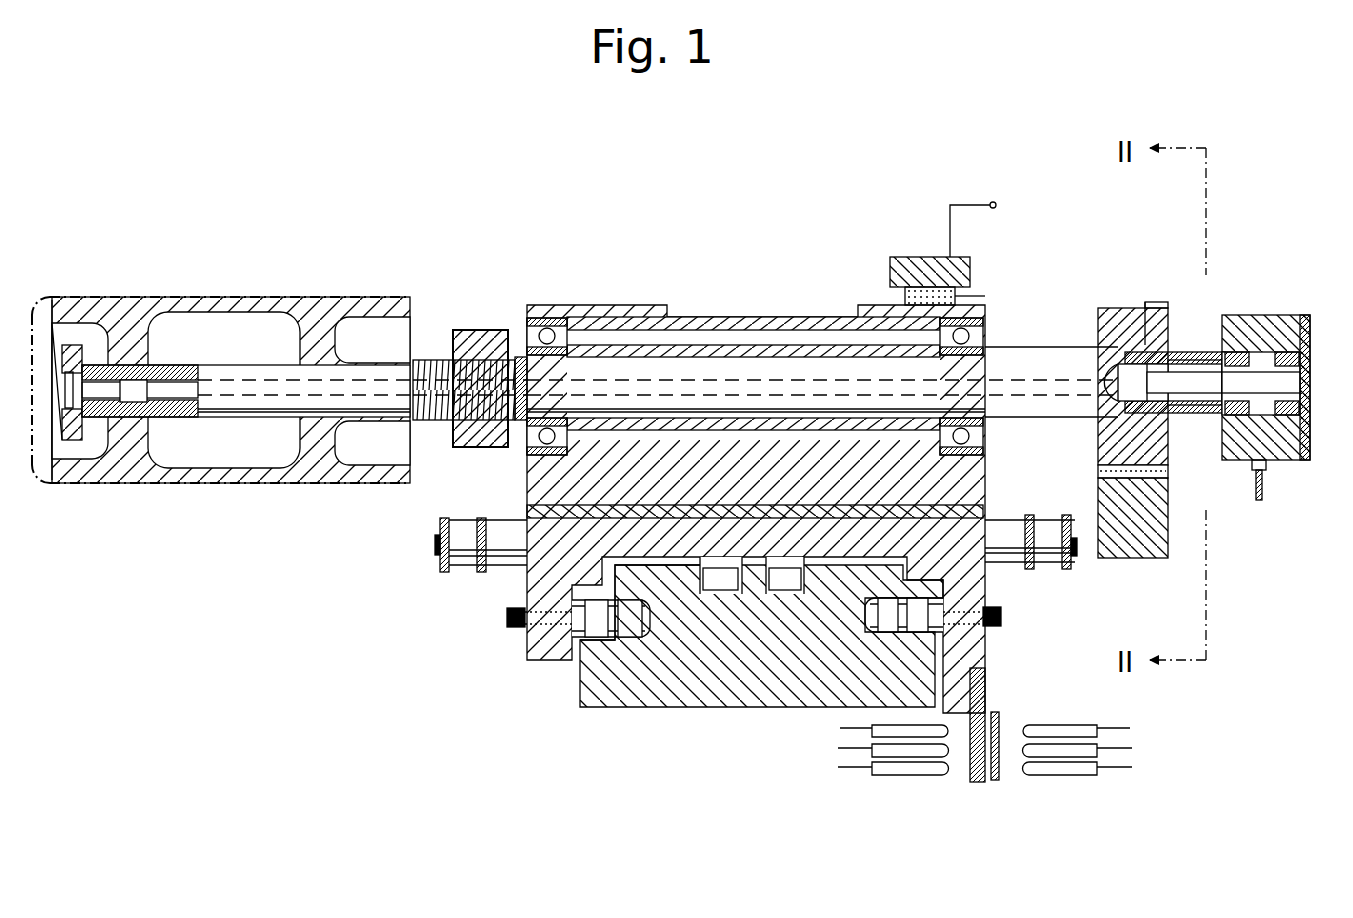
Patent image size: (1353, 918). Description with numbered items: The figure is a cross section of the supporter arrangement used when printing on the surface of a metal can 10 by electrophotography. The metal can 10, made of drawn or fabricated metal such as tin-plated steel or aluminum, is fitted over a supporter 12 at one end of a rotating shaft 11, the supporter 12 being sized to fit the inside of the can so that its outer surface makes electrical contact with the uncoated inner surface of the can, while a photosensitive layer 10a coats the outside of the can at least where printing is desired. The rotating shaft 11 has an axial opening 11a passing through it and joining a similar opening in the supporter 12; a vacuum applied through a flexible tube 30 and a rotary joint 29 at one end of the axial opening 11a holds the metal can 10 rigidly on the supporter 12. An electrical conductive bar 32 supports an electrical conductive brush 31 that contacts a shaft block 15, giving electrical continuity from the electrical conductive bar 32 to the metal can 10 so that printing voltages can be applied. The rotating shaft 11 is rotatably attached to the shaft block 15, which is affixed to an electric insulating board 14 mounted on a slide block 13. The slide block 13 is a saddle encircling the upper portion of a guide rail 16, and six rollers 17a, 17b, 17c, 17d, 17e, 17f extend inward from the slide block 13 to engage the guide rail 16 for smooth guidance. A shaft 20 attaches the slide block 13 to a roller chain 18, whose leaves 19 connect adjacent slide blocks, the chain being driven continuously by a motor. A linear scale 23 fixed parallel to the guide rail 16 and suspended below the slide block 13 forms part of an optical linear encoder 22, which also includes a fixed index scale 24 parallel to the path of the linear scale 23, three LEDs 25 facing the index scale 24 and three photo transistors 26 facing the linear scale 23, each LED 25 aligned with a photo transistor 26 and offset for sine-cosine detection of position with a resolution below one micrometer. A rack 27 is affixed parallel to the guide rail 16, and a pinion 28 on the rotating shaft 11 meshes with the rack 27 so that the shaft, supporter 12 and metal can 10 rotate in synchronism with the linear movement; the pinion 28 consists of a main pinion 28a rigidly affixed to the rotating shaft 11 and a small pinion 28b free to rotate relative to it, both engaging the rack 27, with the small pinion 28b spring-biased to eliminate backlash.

The metal can 10 is at (190, 490).
The photosensitive layer 10a is at (290, 484).
The rotating shaft 11 is at (683, 352).
The axial opening 11a is at (790, 380).
The supporter 12 is at (330, 297).
The slide block 13 is at (985, 582).
The electric insulating board 14 is at (527, 511).
The shaft block 15 is at (748, 320).
The guide rail 16 is at (712, 718).
The roller 17a is at (597, 616).
The roller 17b is at (628, 616).
The roller 17c is at (720, 592).
The roller 17d is at (785, 588).
The roller 17e is at (830, 683).
The roller 17f is at (917, 618).
The roller chain 18 is at (1035, 528).
The leaves 19 is at (1068, 570).
The shaft 20 is at (1008, 524).
The optical linear encoder 22 is at (1040, 790).
The linear scale 23 is at (975, 786).
The index scale 24 is at (996, 786).
The LED 25 is at (1082, 790).
The photo transistor 26 is at (912, 786).
The rack 27 is at (1140, 548).
The pinion 28 is at (1128, 296).
The main pinion 28a is at (1110, 345).
The small pinion 28b is at (1155, 325).
The rotary joint 29 is at (1270, 330).
The flexible tube 30 is at (1262, 495).
The electrical conductive brush 31 is at (985, 296).
The electrical conductive bar 32 is at (915, 270).